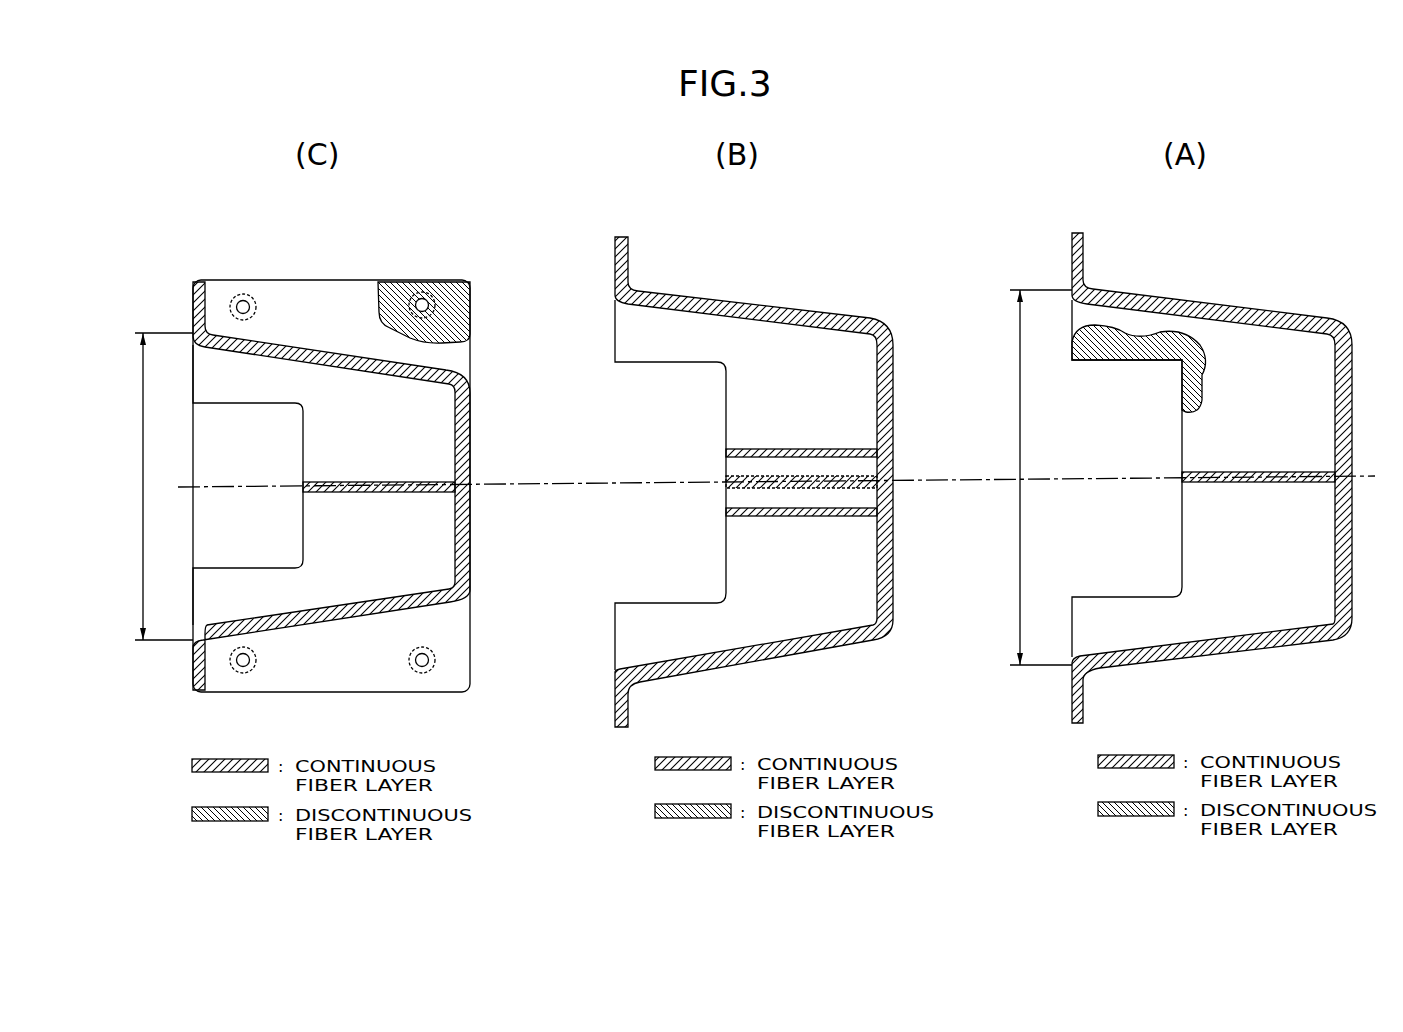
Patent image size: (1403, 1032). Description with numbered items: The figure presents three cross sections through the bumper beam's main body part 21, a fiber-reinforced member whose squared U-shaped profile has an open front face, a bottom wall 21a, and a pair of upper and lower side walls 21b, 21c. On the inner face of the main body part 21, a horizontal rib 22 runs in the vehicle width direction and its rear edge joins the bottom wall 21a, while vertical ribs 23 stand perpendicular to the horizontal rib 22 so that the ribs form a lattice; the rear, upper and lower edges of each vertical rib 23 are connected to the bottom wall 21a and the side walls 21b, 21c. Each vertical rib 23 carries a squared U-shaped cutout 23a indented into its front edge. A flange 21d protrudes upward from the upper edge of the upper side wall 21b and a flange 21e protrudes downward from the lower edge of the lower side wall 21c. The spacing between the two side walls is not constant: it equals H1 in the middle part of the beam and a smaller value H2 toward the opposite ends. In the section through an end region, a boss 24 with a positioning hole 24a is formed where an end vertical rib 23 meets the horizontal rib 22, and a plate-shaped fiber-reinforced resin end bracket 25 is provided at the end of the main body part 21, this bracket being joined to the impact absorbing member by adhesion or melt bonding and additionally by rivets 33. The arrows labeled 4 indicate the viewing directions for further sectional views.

The main body part 21 is at (320, 336).
The bottom wall 21a is at (470, 440).
The upper side wall 21b is at (290, 334).
The lower side wall 21c is at (325, 630).
The flange 21d is at (193, 300).
The flange 21e is at (193, 665).
The horizontal rib 22 is at (375, 493).
The vertical rib 23 is at (247, 556).
The cutout 23a is at (298, 460).
The boss 24 is at (806, 445).
The positioning hole 24a is at (740, 458).
The end bracket 25 is at (357, 297).
The rivet 33 is at (243, 299).
The section direction arrows 4(A), 4(B) 4 is at (1270, 280).
The gap in middle part H1 is at (1037, 477).
The gap in end parts H2 is at (162, 486).